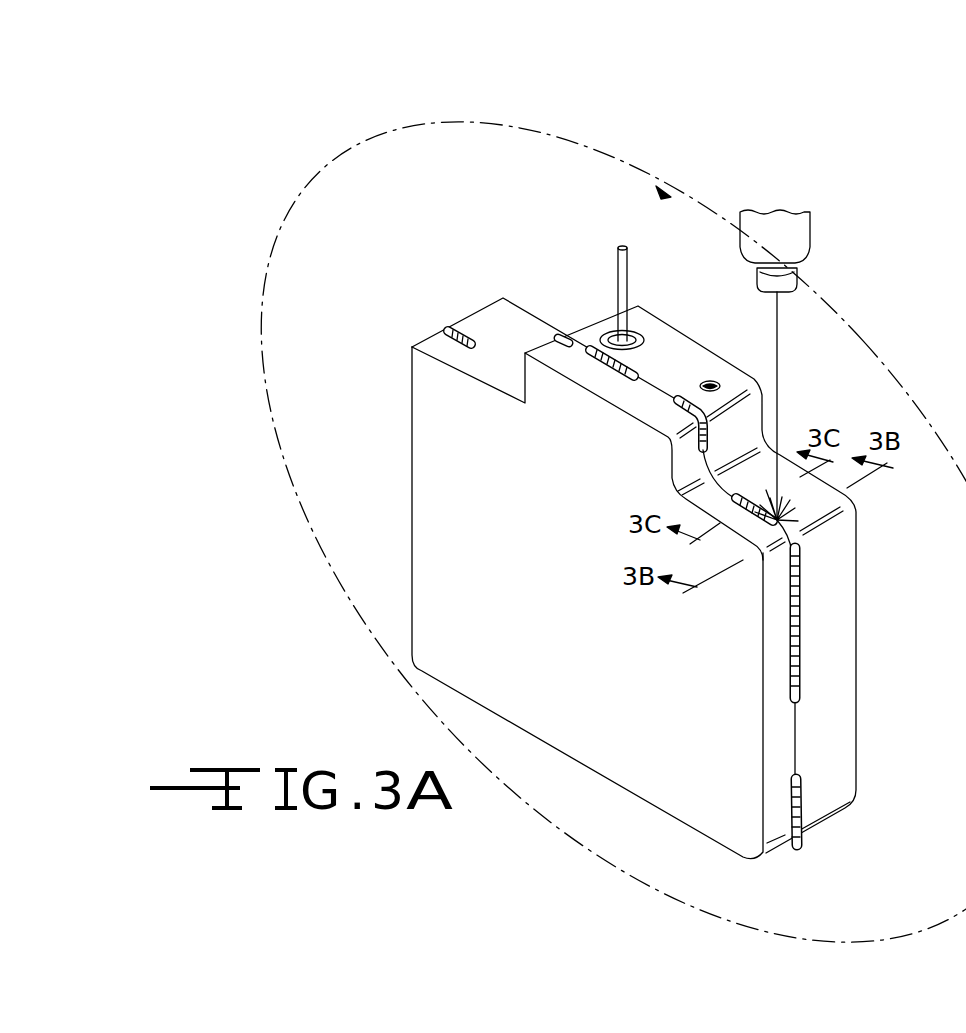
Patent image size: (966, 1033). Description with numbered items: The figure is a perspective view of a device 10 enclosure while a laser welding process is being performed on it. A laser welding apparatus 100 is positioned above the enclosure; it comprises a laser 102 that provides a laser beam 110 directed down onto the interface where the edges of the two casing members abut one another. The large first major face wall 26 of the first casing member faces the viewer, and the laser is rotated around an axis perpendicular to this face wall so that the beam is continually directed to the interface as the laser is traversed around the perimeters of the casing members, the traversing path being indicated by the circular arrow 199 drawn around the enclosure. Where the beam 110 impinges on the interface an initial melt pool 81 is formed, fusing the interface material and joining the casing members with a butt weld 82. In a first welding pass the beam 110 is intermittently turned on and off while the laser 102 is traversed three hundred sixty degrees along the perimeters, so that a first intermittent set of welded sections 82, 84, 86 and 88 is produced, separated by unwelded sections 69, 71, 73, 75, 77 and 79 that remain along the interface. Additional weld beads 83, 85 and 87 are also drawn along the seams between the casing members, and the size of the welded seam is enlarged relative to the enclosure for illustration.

The device 10 is at (433, 319).
The first major face wall 26 is at (440, 490).
The unwelded section 69 is at (750, 392).
The unwelded section 71 is at (797, 543).
The unwelded section 73 is at (793, 733).
The unwelded section 75 is at (495, 350).
The unwelded section 77 is at (570, 346).
The unwelded section 79 is at (650, 396).
The initial melt pool 81 is at (758, 556).
The butt weld 82 is at (678, 480).
The weld seam 83 is at (790, 657).
The welded section 84 is at (800, 787).
The weld seam 85 is at (466, 342).
The welded section 86 is at (553, 336).
The weld seam 87 is at (610, 372).
The welded section 88 is at (697, 398).
The laser welding apparatus 100 is at (841, 208).
The laser 102 is at (810, 248).
The laser beam 110 is at (780, 347).
The circular arrow 199 is at (582, 150).